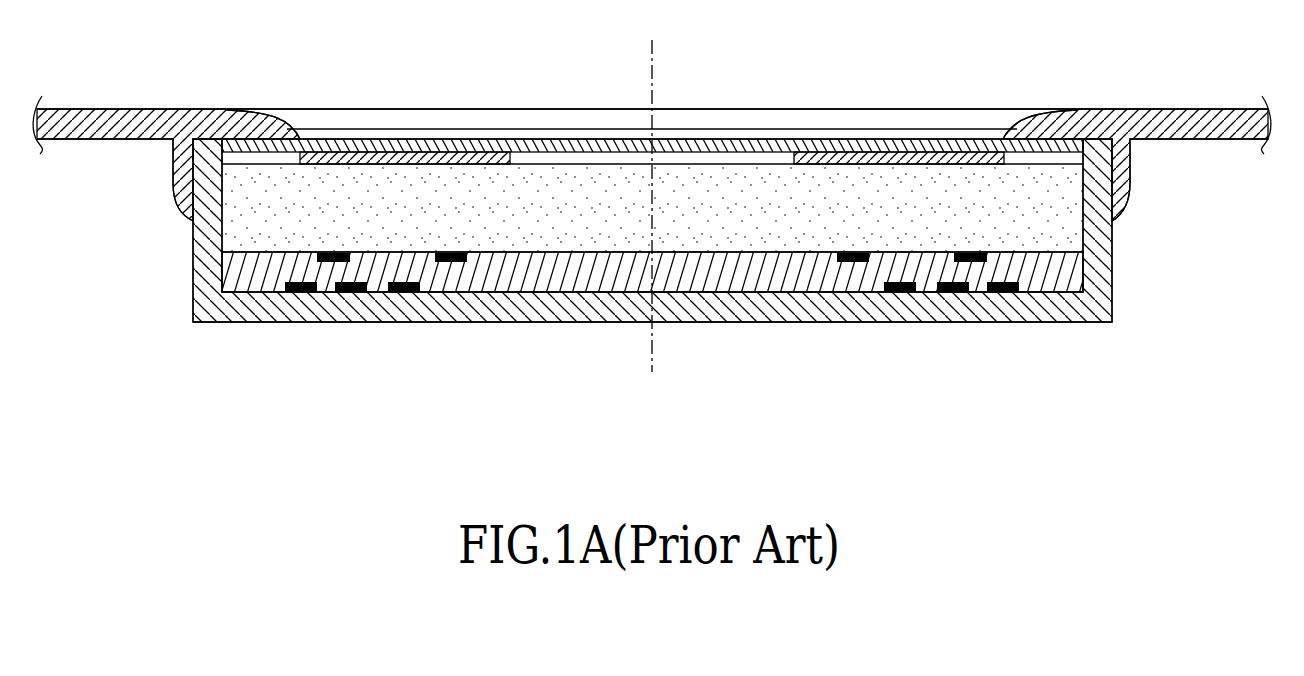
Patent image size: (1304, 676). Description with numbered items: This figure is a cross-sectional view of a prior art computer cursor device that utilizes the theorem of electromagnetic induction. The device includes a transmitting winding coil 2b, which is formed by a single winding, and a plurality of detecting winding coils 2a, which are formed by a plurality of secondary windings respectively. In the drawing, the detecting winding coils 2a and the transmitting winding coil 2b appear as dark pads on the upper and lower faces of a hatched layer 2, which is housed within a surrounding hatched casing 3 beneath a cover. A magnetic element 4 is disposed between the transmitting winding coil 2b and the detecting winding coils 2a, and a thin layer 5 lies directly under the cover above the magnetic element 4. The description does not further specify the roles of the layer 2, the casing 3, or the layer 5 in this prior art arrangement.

The printed circuit board 2 is at (547, 278).
The detecting winding coils 2a is at (330, 252).
The transmitting winding coil 2b is at (290, 282).
The housing 3 is at (1063, 225).
The magnetic element 4 is at (857, 158).
The display panel 5 is at (755, 145).